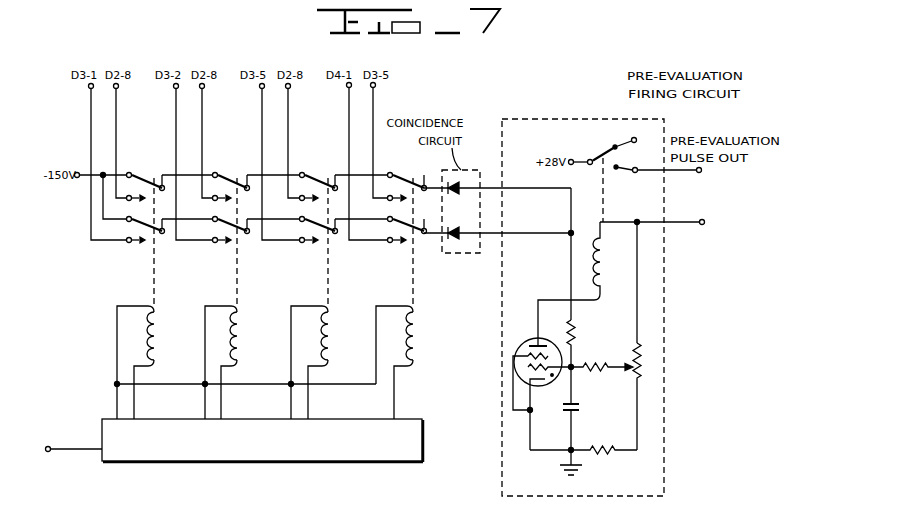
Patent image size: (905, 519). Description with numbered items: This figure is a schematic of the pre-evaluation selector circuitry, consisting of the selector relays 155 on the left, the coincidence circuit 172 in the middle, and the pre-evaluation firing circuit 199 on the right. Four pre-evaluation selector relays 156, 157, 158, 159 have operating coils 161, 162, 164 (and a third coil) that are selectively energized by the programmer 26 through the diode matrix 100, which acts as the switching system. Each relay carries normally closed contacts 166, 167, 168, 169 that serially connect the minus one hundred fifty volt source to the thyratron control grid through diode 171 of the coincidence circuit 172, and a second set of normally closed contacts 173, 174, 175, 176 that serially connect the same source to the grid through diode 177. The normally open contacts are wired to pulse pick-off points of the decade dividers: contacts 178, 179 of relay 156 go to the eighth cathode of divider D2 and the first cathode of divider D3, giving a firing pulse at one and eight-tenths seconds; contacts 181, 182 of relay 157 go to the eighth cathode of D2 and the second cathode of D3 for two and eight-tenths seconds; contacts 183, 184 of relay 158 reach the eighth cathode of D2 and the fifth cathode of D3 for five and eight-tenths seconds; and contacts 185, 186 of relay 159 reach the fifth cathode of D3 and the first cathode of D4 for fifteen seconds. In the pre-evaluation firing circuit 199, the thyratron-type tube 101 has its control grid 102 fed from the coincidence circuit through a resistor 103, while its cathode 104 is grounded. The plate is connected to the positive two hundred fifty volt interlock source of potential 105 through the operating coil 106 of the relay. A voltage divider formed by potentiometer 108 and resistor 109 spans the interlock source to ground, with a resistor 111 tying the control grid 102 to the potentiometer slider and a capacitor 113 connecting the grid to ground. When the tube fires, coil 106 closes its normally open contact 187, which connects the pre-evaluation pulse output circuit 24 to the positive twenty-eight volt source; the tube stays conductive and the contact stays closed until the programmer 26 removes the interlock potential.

The pre-evaluation pulse output circuit 24 is at (695, 174).
The programmer 26 is at (51, 446).
The diode matrix 100 is at (305, 462).
The thyratron-type tube 101 is at (520, 348).
The control grid 102 is at (549, 351).
The resistor 103 is at (580, 335).
The cathode 104 is at (536, 383).
The positive 250 volt source of potential 105 is at (701, 218).
The operating coil 106 is at (610, 260).
The potentiometer 108 is at (632, 357).
The resistor 109 is at (602, 453).
The resistor 111 is at (593, 365).
The capacitor 113 is at (580, 408).
The selector relays 155 is at (50, 255).
The pre-evaluation selector relay 156 is at (82, 310).
The pre-evaluation selector relay 157 is at (173, 310).
The pre-evaluation selector relay 158 is at (261, 310).
The pre-evaluation selector relay 159 is at (347, 310).
The operating coil 161 is at (156, 333).
The operating coil 162 is at (240, 333).
The operating coil 164 is at (415, 333).
The normally closed contacts 166 is at (154, 176).
The normally closed contacts 167 is at (237, 176).
The normally closed contacts 168 is at (328, 176).
The normally closed contacts 169 is at (413, 176).
The diode 171 is at (449, 192).
The coincidence circuit 172 is at (461, 169).
The normally closed contacts 173 is at (156, 221).
The normally closed contacts 174 is at (240, 221).
The normally closed contacts 175 is at (330, 221).
The normally closed contacts 176 is at (405, 219).
The diode 177 is at (451, 233).
The normally open contact 178 is at (145, 183).
The normally open contact 179 is at (145, 227).
The normally open contact 181 is at (230, 182).
The normally open contact 182 is at (228, 231).
The normally open contact 183 is at (319, 183).
The normally open contact 184 is at (312, 230).
The normally open contact 185 is at (404, 184).
The normally open contact 186 is at (400, 229).
The normally open contact 187 is at (616, 158).
The pre-evaluation firing circuit 199 is at (666, 404).